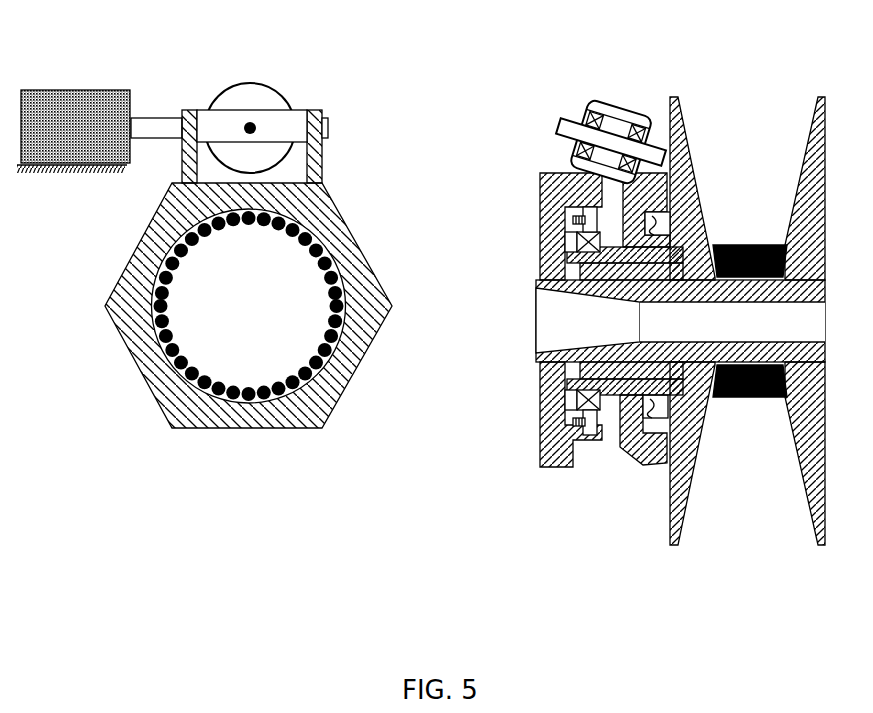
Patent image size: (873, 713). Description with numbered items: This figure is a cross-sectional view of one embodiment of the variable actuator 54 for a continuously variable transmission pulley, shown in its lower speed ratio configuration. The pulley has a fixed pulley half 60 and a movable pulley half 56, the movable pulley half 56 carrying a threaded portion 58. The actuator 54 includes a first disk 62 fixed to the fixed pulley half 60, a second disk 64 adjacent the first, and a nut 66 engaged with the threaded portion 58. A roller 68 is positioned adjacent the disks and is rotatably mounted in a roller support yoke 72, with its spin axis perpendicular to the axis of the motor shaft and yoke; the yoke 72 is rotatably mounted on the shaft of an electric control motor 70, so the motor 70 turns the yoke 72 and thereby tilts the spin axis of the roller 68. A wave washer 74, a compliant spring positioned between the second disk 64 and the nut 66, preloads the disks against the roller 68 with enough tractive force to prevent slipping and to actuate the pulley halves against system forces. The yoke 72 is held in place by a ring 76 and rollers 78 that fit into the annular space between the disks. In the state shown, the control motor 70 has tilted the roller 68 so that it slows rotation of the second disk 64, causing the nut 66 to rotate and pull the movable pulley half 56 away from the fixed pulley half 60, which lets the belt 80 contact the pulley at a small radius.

The variable actuator 54 is at (678, 304).
The movable pulley half 56 is at (680, 520).
The threaded portion 58 is at (693, 472).
The fixed pulley half 60 is at (817, 543).
The first disk 62 is at (540, 468).
The second disk 64 is at (647, 462).
The nut 66 is at (603, 440).
The roller 68 is at (608, 107).
The electric control motor 70 is at (72, 108).
The roller support yoke 72 is at (298, 118).
The wave washer 74 is at (690, 148).
The ring 76 is at (163, 397).
The rollers 78 is at (300, 383).
The belt 80 is at (765, 243).